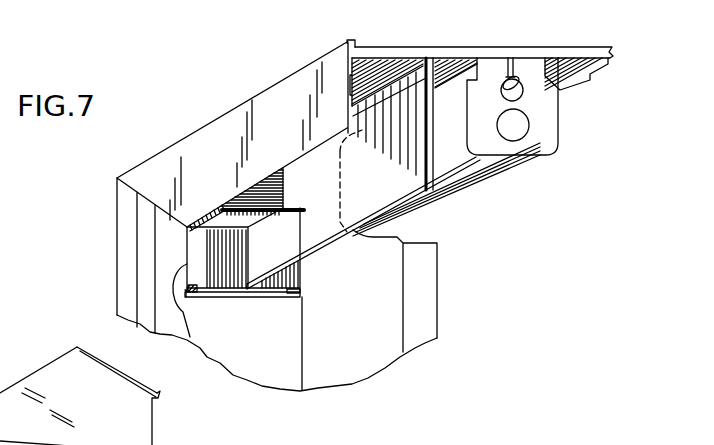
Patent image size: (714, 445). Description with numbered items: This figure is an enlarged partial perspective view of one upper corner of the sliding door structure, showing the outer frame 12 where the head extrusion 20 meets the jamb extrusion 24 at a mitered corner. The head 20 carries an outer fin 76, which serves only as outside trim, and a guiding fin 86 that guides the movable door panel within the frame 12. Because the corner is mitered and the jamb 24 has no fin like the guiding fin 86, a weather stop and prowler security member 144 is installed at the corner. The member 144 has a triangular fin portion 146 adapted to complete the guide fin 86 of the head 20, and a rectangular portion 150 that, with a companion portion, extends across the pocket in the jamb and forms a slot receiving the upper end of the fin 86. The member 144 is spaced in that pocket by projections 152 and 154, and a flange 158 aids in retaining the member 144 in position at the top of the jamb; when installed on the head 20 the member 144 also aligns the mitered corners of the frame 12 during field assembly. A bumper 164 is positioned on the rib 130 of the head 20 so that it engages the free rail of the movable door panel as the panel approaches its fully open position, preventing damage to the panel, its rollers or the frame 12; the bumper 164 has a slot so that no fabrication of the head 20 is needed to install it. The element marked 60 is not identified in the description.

The outer frame 12 is at (253, 107).
The outer fin 76 is at (223, 130).
The rectangular portion 150 is at (270, 187).
The weather stop and prowler security member 144 is at (245, 300).
The projection 154 is at (188, 298).
The projection 152 is at (296, 295).
The triangular fin portion 146 is at (323, 250).
The guiding fin 86 is at (437, 190).
The jamb extrusion 24 is at (287, 390).
The head extrusion 20 is at (547, 48).
The bumper 164 is at (507, 162).
The rib 130 is at (507, 77).
The cabinet 60 is at (80, 391).
The flange 158 is at (117, 372).